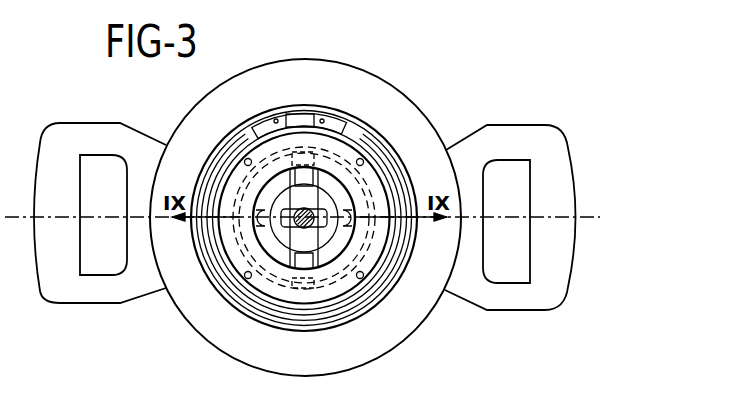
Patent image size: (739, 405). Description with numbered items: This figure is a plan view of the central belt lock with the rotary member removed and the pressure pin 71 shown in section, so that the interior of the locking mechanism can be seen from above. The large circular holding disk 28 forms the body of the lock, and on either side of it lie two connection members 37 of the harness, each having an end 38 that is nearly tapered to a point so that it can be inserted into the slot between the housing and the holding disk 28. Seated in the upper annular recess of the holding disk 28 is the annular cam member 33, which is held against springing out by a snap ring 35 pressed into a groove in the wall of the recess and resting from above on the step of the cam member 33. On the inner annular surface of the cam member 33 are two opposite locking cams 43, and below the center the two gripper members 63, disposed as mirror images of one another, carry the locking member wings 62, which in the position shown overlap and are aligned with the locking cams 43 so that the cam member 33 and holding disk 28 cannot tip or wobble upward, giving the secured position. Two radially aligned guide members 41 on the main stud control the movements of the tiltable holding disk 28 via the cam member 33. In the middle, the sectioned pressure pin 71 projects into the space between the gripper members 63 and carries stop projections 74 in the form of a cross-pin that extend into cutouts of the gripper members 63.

The holding disk 28 is at (389, 93).
The cam member 33 is at (220, 272).
The snap ring 35 is at (331, 118).
The connection member 37 is at (503, 302).
The end 38 is at (305, 219).
The guide members 41 is at (292, 176).
The locking cams 43 is at (228, 166).
The locking member wings 62 is at (265, 207).
The gripper members 63 is at (341, 195).
The pressure pin 71 is at (312, 236).
The stop projections 74 is at (289, 228).